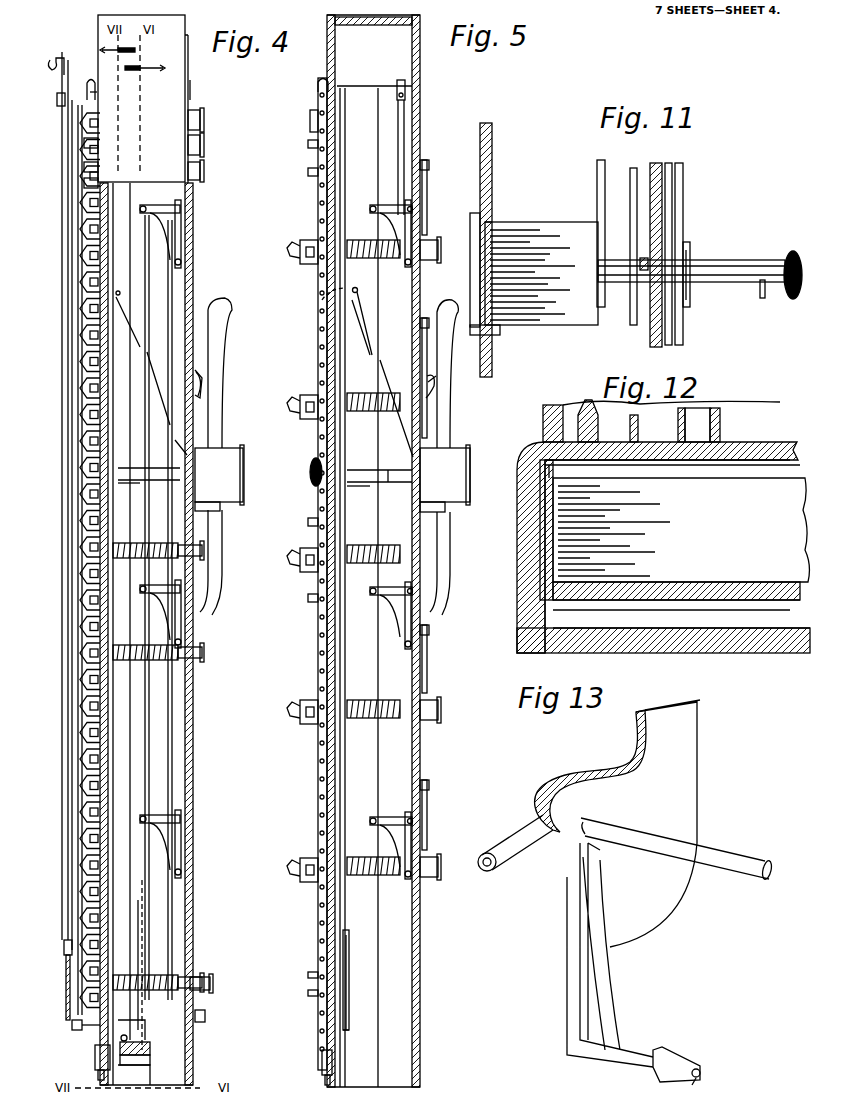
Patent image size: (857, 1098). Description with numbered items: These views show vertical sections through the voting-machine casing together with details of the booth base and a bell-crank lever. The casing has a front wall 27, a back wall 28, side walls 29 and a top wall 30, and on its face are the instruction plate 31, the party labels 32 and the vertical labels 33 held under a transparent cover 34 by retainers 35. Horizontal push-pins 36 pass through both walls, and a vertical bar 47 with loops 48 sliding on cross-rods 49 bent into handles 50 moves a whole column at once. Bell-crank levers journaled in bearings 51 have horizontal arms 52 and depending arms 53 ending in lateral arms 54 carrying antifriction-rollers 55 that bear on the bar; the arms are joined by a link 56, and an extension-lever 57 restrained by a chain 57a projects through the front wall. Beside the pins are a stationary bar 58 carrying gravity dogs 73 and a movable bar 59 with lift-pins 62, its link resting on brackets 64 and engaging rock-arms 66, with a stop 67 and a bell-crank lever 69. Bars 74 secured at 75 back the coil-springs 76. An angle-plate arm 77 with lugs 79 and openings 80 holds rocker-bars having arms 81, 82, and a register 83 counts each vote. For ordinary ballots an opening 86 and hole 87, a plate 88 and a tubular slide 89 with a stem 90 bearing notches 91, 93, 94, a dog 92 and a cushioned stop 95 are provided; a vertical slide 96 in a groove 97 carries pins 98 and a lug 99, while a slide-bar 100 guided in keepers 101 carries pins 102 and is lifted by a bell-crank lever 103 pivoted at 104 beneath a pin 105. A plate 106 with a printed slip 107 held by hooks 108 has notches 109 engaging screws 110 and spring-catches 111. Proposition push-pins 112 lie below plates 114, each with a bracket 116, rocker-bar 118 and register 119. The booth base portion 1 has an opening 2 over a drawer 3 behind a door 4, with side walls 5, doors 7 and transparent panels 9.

In FIG. 12, the base portion 1 is at (520, 445).
In FIG. 12, the opening 2 is at (745, 455).
In FIG. 12, the drawer 3 is at (681, 530).
In FIG. 12, the door 4 is at (553, 478).
In FIG. 12, the side walls 5 is at (553, 414).
In FIG. 12, the doors 7 is at (725, 442).
In FIG. 12, the transparent panels 9 is at (589, 400).
In FIG. 5, the front wall 27 is at (418, 64).
In FIG. 11, the front wall 27 is at (492, 150).
In FIG. 5, the back wall 28 is at (327, 57).
In FIG. 11, the back wall 28 is at (672, 180).
In FIG. 4, the side walls 29 is at (141, 98).
In FIG. 5, the side walls 29 is at (374, 567).
In FIG. 5, the top wall 30 is at (373, 33).
In FIG. 4, the plate 31 is at (190, 46).
In FIG. 4, the labels 32 is at (190, 86).
In FIG. 4, the vertical labels 33 is at (193, 722).
In FIG. 4, the cover 34 is at (193, 746).
In FIG. 4, the retainers 35 is at (205, 1016).
In FIG. 4, the push-pins 36 is at (205, 975).
In FIG. 5, the vertical bar 47 is at (398, 142).
In FIG. 5, the loops 48 is at (400, 80).
In FIG. 5, the cross-rods 49 is at (362, 86).
In FIG. 4, the handles 50 is at (90, 78).
In FIG. 5, the handles 50 is at (318, 86).
In FIG. 4, the bearings 51 is at (182, 214).
In FIG. 4, the rearwardly-projecting arms 52 is at (142, 207).
In FIG. 5, the rearwardly-projecting arms 52 is at (388, 205).
In FIG. 13, the rearwardly-projecting arms 52 is at (520, 846).
In FIG. 4, the depending arms 53 is at (180, 240).
In FIG. 5, the depending arms 53 is at (412, 225).
In FIG. 13, the depending arms 53 is at (575, 1018).
In FIG. 4, the arms 54 is at (182, 262).
In FIG. 5, the arms 54 is at (416, 262).
In FIG. 13, the arms 54 is at (682, 1058).
In FIG. 13, the antifriction-rollers 55 is at (658, 1075).
In FIG. 4, the link 56 is at (128, 611).
In FIG. 5, the link 56 is at (372, 762).
In FIG. 4, the extension-lever 57 is at (220, 588).
In FIG. 5, the extension-lever 57 is at (452, 556).
In FIG. 13, the extension-lever 57 is at (690, 827).
In FIG. 4, the chain 57a is at (205, 388).
In FIG. 5, the chain 57a is at (434, 390).
In FIG. 4, the stationary bar 58 is at (115, 900).
In FIG. 5, the stationary bar 58 is at (349, 970).
In FIG. 4, the movable bar 59 is at (130, 1028).
In FIG. 5, the movable bar 59 is at (320, 1035).
In FIG. 11, the movable bar 59 is at (655, 163).
In FIG. 5, the lift-pin 62 is at (348, 460).
In FIG. 4, the brackets 64 is at (150, 1060).
In FIG. 4, the rock-arms 66 is at (150, 1072).
In FIG. 4, the stop 67 is at (85, 338).
In FIG. 4, the bell-crank lever 69 is at (150, 1048).
In FIG. 4, the dogs 73 is at (113, 548).
In FIG. 5, the dogs 73 is at (340, 500).
In FIG. 4, the bars 74 is at (118, 880).
In FIG. 5, the bars 74 is at (349, 990).
In FIG. 11, the bars 74 is at (603, 165).
In FIG. 5, the securing point 75 is at (349, 1026).
In FIG. 4, the coil-springs 76 is at (130, 662).
In FIG. 5, the coil-springs 76 is at (360, 712).
In FIG. 4, the rearwardly-projecting arm 77 is at (80, 316).
In FIG. 4, the lugs 79 is at (80, 117).
In FIG. 4, the opening 80 is at (82, 448).
In FIG. 4, the arm 81 is at (84, 183).
In FIG. 5, the arm 81 is at (308, 142).
In FIG. 4, the arm 82 is at (84, 167).
In FIG. 5, the arm 82 is at (310, 135).
In FIG. 4, the register 83 is at (84, 143).
In FIG. 11, the rectangular opening 86 is at (495, 222).
In FIG. 11, the hole 87 is at (698, 254).
In FIG. 4, the plate 88 is at (225, 508).
In FIG. 5, the plate 88 is at (445, 510).
In FIG. 11, the plate 88 is at (500, 330).
In FIG. 4, the tubular slide 89 is at (219, 475).
In FIG. 5, the tubular slide 89 is at (445, 475).
In FIG. 11, the tubular slide 89 is at (541, 273).
In FIG. 4, the stem 90 is at (128, 468).
In FIG. 5, the stem 90 is at (358, 482).
In FIG. 11, the stem 90 is at (617, 290).
In FIG. 4, the notch 91 is at (158, 480).
In FIG. 5, the notch 91 is at (390, 482).
In FIG. 11, the notch 91 is at (634, 262).
In FIG. 11, the dog 92 is at (642, 260).
In FIG. 11, the notch 93 is at (762, 298).
In FIG. 4, the notch 94 is at (136, 484).
In FIG. 5, the notch 94 is at (364, 488).
In FIG. 11, the notch 94 is at (688, 287).
In FIG. 5, the cushioned stop 95 is at (310, 468).
In FIG. 11, the cushioned stop 95 is at (792, 300).
In FIG. 5, the vertical slide 96 is at (320, 800).
In FIG. 11, the vertical slide 96 is at (672, 345).
In FIG. 5, the vertical groove 97 is at (313, 112).
In FIG. 4, the pins 98 is at (84, 377).
In FIG. 5, the pins 98 is at (320, 825).
In FIG. 11, the lug 99 is at (668, 288).
In FIG. 5, the vertical slide-bar 100 is at (318, 955).
In FIG. 11, the vertical slide-bar 100 is at (683, 228).
In FIG. 4, the keepers 101 is at (98, 94).
In FIG. 5, the keepers 101 is at (322, 1062).
In FIG. 5, the pins 102 is at (320, 1010).
In FIG. 4, the bell-crank lever 103 is at (122, 330).
In FIG. 5, the bell-crank lever 103 is at (372, 306).
In FIG. 4, the pivot 104 is at (120, 290).
In FIG. 5, the pivot 104 is at (358, 290).
In FIG. 5, the pin 105 is at (320, 300).
In FIG. 4, the plate 106 is at (66, 217).
In FIG. 4, the printed slip 107 is at (68, 244).
In FIG. 4, the pivoted hooks 108 is at (57, 97).
In FIG. 4, the notches 109 is at (72, 1025).
In FIG. 4, the supporting-screws 110 is at (95, 1030).
In FIG. 4, the spring-catches 111 is at (54, 60).
In FIG. 5, the push-pins 112 is at (432, 718).
In FIG. 5, the plates 114 is at (428, 185).
In FIG. 5, the bracket 116 is at (310, 700).
In FIG. 5, the rocker-bar 118 is at (312, 568).
In FIG. 5, the register 119 is at (290, 258).